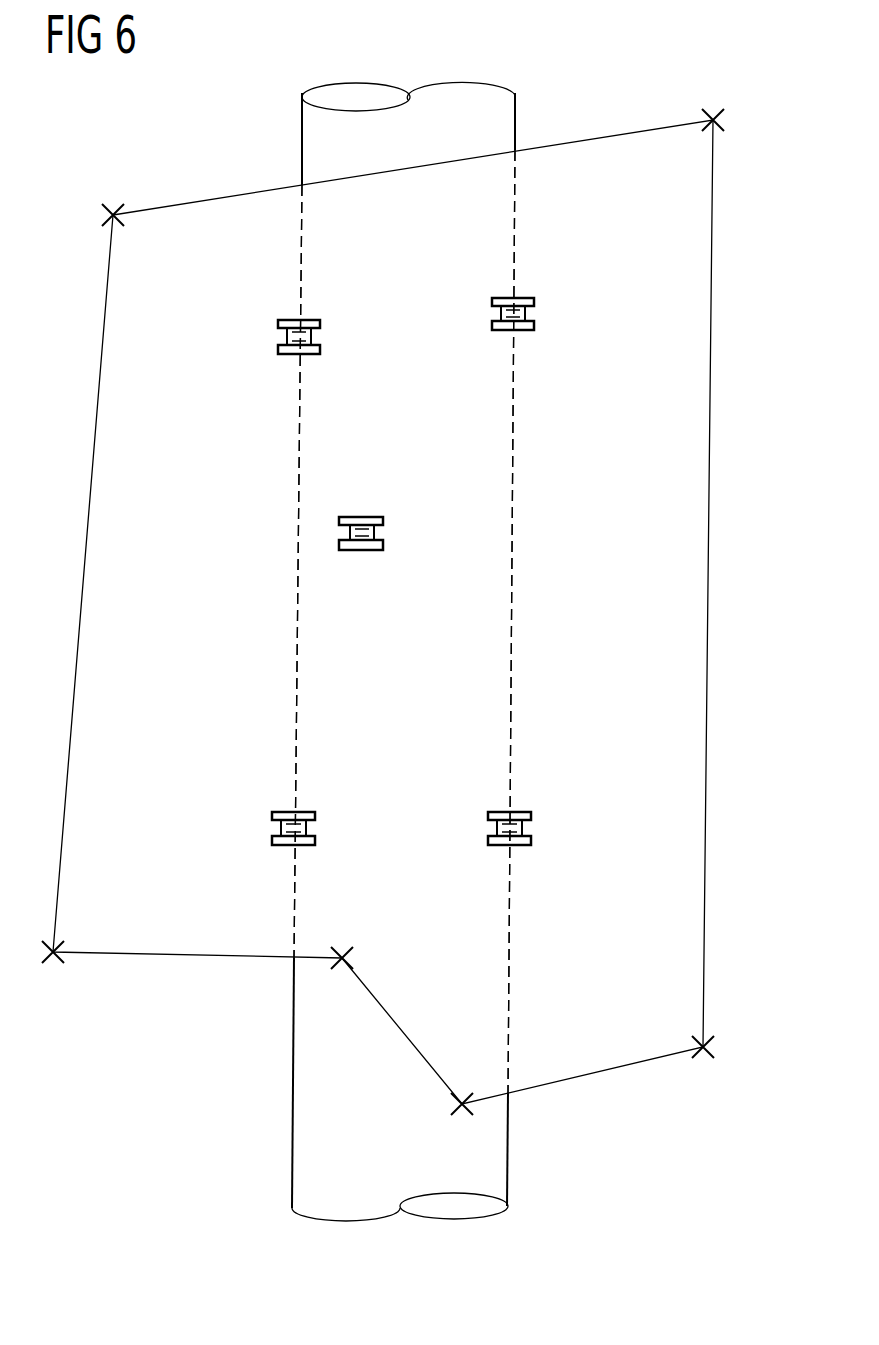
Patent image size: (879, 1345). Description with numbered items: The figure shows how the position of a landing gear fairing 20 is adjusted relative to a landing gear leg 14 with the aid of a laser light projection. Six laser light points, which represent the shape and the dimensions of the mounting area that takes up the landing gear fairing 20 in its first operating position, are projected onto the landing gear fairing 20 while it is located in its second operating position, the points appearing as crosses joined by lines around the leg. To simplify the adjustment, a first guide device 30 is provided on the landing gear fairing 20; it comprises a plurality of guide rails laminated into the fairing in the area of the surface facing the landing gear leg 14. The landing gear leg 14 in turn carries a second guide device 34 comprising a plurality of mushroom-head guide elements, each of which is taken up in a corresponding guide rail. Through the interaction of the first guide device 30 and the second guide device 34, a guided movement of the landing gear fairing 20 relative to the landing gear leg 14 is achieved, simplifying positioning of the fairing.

The landing gear leg 14 is at (316, 132).
The landing gear fairing 20 is at (690, 541).
The first guide device 30 is at (530, 452).
The second guide device 34 is at (280, 565).